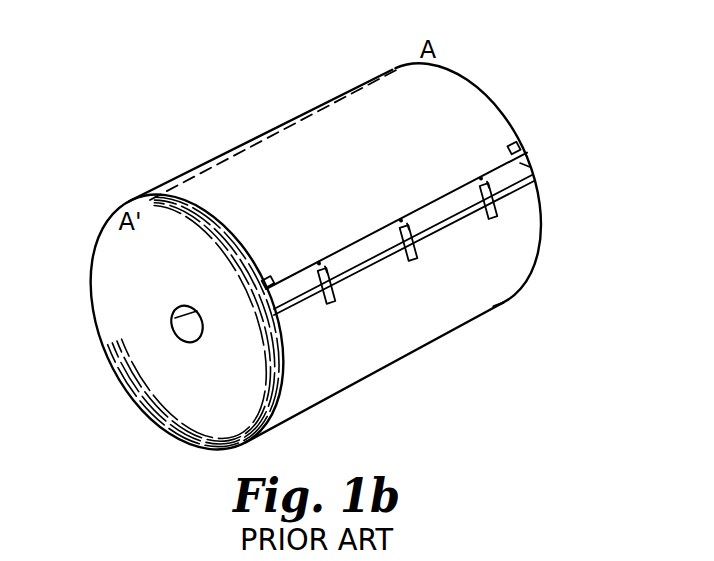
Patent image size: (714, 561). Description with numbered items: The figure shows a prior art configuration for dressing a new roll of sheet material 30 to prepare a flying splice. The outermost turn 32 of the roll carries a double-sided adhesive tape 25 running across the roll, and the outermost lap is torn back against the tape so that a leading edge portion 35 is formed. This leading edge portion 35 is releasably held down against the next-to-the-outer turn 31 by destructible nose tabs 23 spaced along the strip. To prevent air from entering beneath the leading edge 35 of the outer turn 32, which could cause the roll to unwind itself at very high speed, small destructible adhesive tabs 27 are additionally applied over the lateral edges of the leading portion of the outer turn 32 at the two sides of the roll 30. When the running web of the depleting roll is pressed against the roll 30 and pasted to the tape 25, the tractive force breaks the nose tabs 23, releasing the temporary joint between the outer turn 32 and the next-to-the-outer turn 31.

The new roll of sheet material 30 is at (157, 113).
The next-to-the-outer turn 31 is at (510, 233).
The outermost turn 32 is at (368, 90).
The double-sided adhesive tape 25 is at (528, 161).
The leading edge portion 35 is at (372, 263).
The nose tabs 23 is at (334, 292).
The destructible adhesive tabs 27 is at (268, 276).